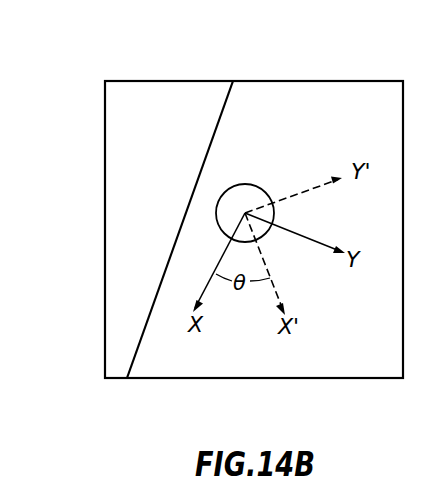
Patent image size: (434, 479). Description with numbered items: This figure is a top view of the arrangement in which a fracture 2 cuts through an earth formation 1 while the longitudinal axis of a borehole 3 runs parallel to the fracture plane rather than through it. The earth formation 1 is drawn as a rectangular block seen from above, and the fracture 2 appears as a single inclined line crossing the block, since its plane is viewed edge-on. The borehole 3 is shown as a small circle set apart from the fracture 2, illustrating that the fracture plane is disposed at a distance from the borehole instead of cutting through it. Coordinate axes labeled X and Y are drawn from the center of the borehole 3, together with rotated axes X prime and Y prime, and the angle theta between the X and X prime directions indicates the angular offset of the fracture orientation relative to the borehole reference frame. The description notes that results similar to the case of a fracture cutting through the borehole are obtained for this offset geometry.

The earth formation 1 is at (155, 148).
The fracture 2 is at (142, 332).
The borehole 3 is at (244, 195).